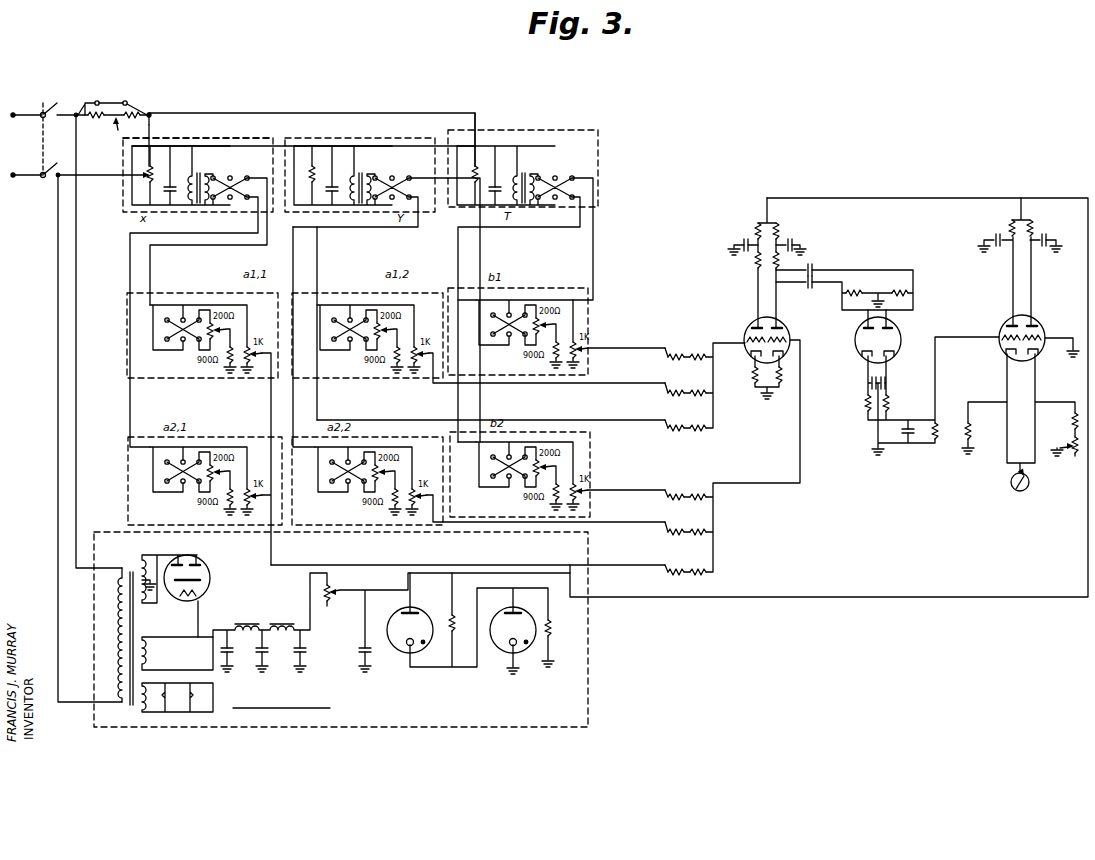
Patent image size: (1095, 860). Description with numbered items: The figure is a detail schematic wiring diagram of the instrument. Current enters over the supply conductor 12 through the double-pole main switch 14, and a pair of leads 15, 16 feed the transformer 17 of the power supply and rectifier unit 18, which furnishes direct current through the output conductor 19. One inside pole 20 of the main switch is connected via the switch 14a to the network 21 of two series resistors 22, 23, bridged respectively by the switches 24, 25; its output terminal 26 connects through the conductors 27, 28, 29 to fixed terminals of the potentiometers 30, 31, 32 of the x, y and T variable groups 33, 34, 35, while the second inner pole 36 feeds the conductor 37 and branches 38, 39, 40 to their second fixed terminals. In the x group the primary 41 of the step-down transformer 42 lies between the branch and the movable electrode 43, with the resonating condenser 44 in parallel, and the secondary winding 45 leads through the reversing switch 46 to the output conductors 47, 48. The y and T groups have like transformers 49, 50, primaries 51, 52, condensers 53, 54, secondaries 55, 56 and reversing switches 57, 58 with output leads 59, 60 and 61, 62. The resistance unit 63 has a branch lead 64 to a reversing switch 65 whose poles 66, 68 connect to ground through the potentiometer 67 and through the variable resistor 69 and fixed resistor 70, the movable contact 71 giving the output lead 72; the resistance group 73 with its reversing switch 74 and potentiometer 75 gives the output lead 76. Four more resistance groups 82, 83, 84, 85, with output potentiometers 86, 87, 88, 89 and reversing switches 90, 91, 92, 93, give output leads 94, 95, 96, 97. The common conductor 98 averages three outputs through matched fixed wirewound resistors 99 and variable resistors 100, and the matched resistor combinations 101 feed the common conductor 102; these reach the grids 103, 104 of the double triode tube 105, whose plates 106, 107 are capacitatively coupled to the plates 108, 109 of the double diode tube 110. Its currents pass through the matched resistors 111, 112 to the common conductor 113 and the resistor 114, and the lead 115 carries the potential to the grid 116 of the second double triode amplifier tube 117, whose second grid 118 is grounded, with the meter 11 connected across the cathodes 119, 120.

The meter 11 is at (1030, 483).
The supply conductor 12 is at (31, 112).
The double-pole main switch 14 is at (30, 150).
The switch 14a is at (45, 102).
The lead 15 is at (56, 389).
The lead 16 is at (78, 392).
The transformer 17 is at (118, 626).
The power supply and rectifier unit 18 is at (330, 728).
The output conductor 19 is at (836, 598).
The inside pole 20 is at (47, 117).
The network 21 is at (114, 124).
The resistor 22 is at (85, 116).
The resistor 23 is at (149, 111).
The switch 24 is at (83, 104).
The switch 25 is at (112, 100).
The output terminal 26 is at (152, 113).
The conductor 27 is at (152, 138).
The conductor 28 is at (237, 113).
The conductor 29 is at (402, 113).
The potentiometer 30 is at (146, 172).
The potentiometer 31 is at (310, 172).
The potentiometer 32 is at (472, 170).
The x variable group 33 is at (124, 212).
The y variable group 34 is at (383, 212).
The T variable group 35 is at (540, 208).
The second inner pole 36 is at (47, 170).
The conductor 37 is at (97, 180).
The branch 38 is at (132, 195).
The branch 39 is at (208, 138).
The branch 40 is at (426, 145).
The primary 41 is at (170, 207).
The step-down transformer 42 is at (200, 172).
The movable electrode 43 is at (19, 176).
The resonating condenser 44 is at (191, 180).
The secondary winding 45 is at (221, 205).
The reversing switch 46 is at (236, 176).
The output conductor 47 is at (273, 212).
The output conductor 48 is at (263, 215).
The step-down transformer 49 is at (354, 174).
The step-down transformer 50 is at (530, 172).
The primary 51 is at (346, 207).
The primary 52 is at (517, 174).
The condenser 53 is at (318, 187).
The condenser 54 is at (490, 187).
The secondary 55 is at (368, 172).
The secondary 56 is at (555, 174).
The reversing switch 57 is at (404, 176).
The reversing switch 58 is at (572, 176).
The output lead 59 is at (425, 215).
The output lead 60 is at (458, 226).
The output lead 61 is at (576, 214).
The output lead 62 is at (598, 222).
The resistance unit 63 is at (226, 291).
The branch lead 64 is at (166, 352).
The reversing switch 65 is at (185, 308).
The switch pole 66 is at (206, 291).
The potentiometer 67 is at (250, 343).
The switch pole 68 is at (193, 348).
The variable resistor 69 is at (222, 346).
The fixed resistor 70 is at (228, 328).
The movable contact 71 is at (250, 353).
The output lead 72 is at (270, 405).
The resistance group 73 is at (246, 437).
The reversing switch 74 is at (195, 458).
The potentiometer 75 is at (266, 495).
The output lead 76 is at (275, 538).
The resistance group 82 is at (340, 296).
The resistance group 83 is at (413, 420).
The resistance group 84 is at (523, 290).
The resistance group 85 is at (556, 420).
The output potentiometer 86 is at (414, 354).
The output potentiometer 87 is at (433, 520).
The output potentiometer 88 is at (592, 349).
The output potentiometer 89 is at (592, 491).
The reversing switch 90 is at (352, 304).
The reversing switch 91 is at (360, 446).
The reversing switch 92 is at (513, 312).
The reversing switch 93 is at (515, 455).
The output lead 94 is at (440, 384).
The output lead 95 is at (478, 522).
The output lead 96 is at (627, 346).
The output lead 97 is at (640, 486).
The common conductor 98 is at (715, 380).
The fixed wirewound resistor 99 is at (688, 360).
The variable resistor 100 is at (672, 372).
The matched resistor combinations 101 is at (682, 509).
The common conductor 102 is at (727, 485).
The grid 103 is at (746, 344).
The grid 104 is at (790, 338).
The double triode tube 105 is at (745, 326).
The plate 106 is at (757, 318).
The plate 107 is at (778, 318).
The plate 108 is at (896, 326).
The plate 109 is at (854, 342).
The double diode tube 110 is at (901, 338).
The matched resistor 111 is at (888, 400).
The matched resistor 112 is at (864, 402).
The common conductor 113 is at (923, 408).
The resistor 114 is at (938, 444).
The lead 115 is at (935, 384).
The grid 116 is at (998, 338).
The second double triode amplifier tube 117 is at (1000, 346).
The second grid 118 is at (1042, 336).
The cathode 119 is at (1008, 360).
The cathode 120 is at (1034, 360).